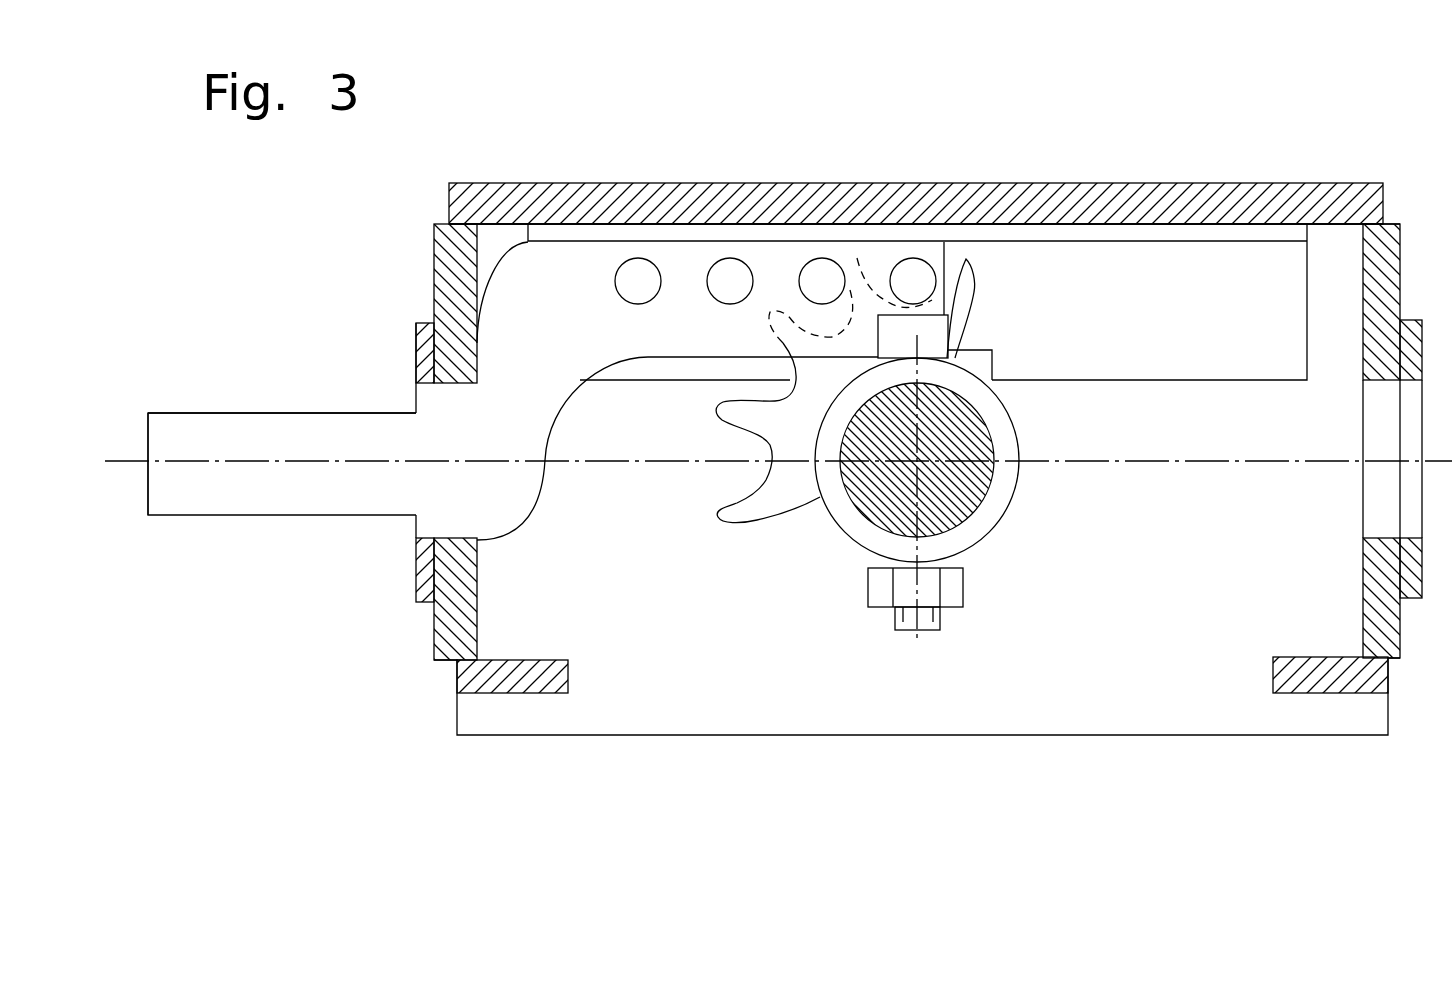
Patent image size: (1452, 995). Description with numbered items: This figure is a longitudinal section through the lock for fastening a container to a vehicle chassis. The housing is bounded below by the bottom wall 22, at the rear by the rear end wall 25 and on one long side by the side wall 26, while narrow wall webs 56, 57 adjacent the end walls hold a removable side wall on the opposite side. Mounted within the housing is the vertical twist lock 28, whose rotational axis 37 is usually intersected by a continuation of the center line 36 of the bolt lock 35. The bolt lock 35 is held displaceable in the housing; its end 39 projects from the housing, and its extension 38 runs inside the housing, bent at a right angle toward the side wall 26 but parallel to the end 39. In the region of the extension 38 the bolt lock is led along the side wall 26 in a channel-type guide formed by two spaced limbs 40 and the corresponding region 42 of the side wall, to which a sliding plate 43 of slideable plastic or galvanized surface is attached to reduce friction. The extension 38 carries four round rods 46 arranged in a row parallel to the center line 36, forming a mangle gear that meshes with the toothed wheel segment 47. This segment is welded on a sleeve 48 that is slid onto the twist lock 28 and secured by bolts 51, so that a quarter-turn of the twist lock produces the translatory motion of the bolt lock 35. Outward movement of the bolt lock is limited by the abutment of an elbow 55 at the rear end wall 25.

The bottom wall 22 is at (950, 738).
The rear end wall 25 is at (455, 253).
The side wall 26 is at (1165, 186).
The twist lock 28 is at (895, 487).
The bolt lock 35 is at (265, 488).
The center line 36 is at (202, 462).
The rotational axis 37 is at (917, 460).
The extension 38 is at (692, 267).
The end 39 is at (165, 485).
The limb 40 is at (1010, 272).
The region of the side wall 42 is at (865, 186).
The sliding plate 43 is at (808, 235).
The round rods 46 is at (637, 278).
The toothed wheel segment 47 is at (790, 483).
The sleeve 48 is at (1005, 477).
The bolt 51 is at (945, 612).
The elbow 55 is at (485, 353).
The wall web 56 is at (517, 677).
The wall web 57 is at (1351, 677).